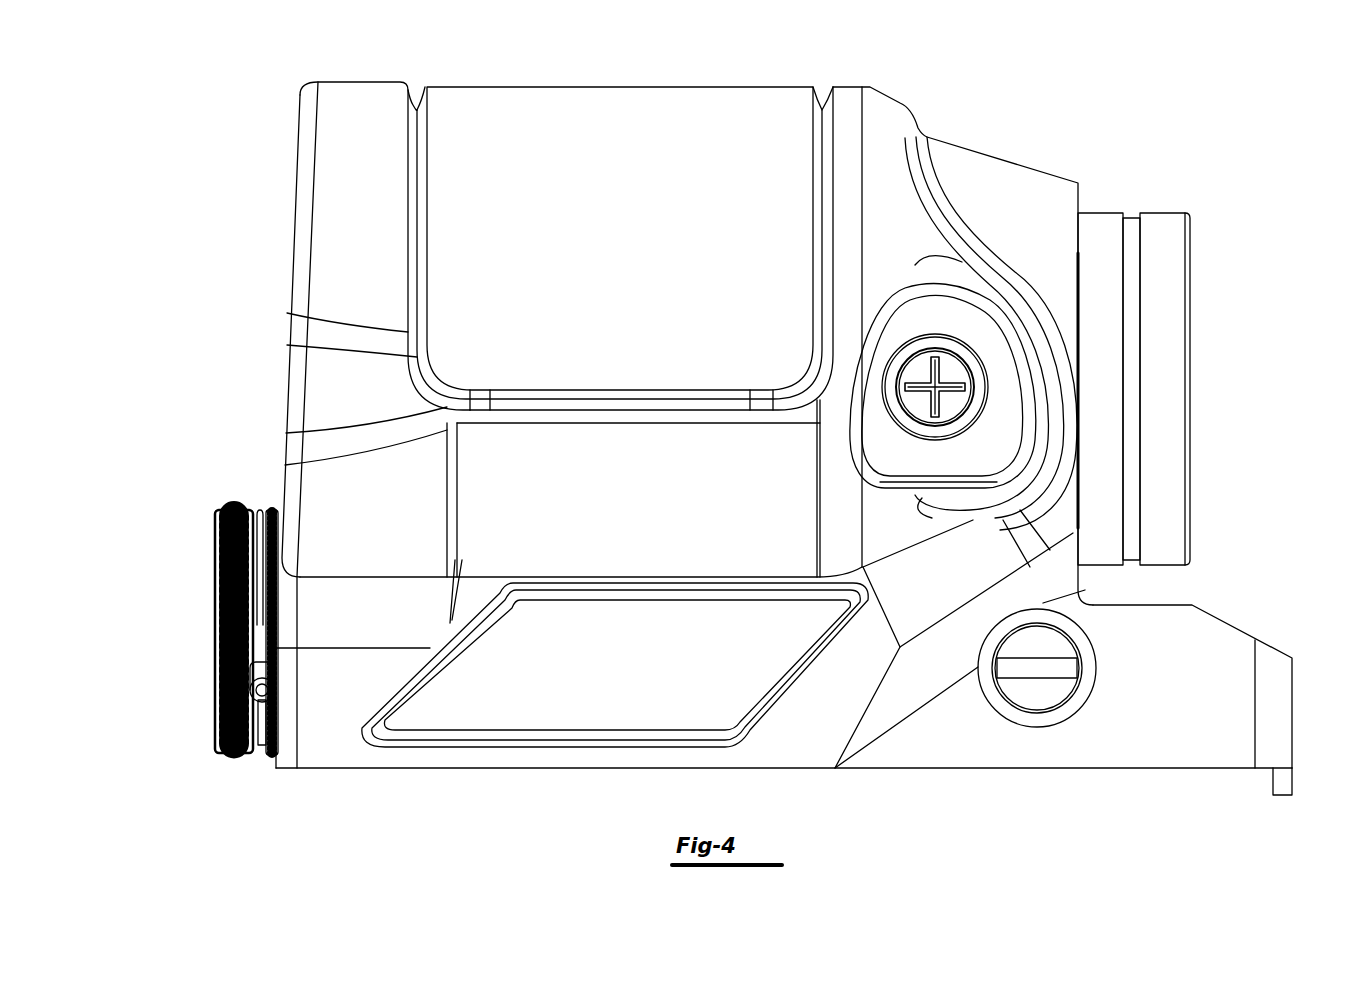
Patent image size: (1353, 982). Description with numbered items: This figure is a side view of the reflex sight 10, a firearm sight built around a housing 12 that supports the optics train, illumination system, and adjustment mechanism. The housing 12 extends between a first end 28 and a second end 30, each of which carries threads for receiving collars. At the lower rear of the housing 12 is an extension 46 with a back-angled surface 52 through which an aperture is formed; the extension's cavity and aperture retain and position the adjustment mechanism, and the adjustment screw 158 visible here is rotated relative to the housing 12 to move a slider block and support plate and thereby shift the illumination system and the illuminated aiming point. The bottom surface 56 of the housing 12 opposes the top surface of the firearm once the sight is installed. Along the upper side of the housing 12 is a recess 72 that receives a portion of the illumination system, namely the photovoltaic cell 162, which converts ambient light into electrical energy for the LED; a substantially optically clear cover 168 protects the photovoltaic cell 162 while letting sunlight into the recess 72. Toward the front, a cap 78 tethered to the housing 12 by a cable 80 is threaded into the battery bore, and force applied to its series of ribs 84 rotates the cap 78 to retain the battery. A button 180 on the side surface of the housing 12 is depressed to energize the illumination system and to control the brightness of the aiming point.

The reflex sight 10 is at (240, 98).
The housing 12 is at (866, 88).
The first end 28 is at (298, 138).
The second end 30 is at (1085, 230).
The extension 46 is at (1178, 596).
The back-angled surface 52 is at (1242, 630).
The bottom surface 56 is at (1072, 770).
The recess 72 is at (822, 108).
The cap 78 is at (203, 565).
The cable 80 is at (280, 705).
The ribs 84 is at (228, 510).
The adjustment screw 158 is at (1060, 690).
The photovoltaic cell 162 is at (550, 118).
The cover 168 is at (688, 108).
The button 180 is at (960, 380).